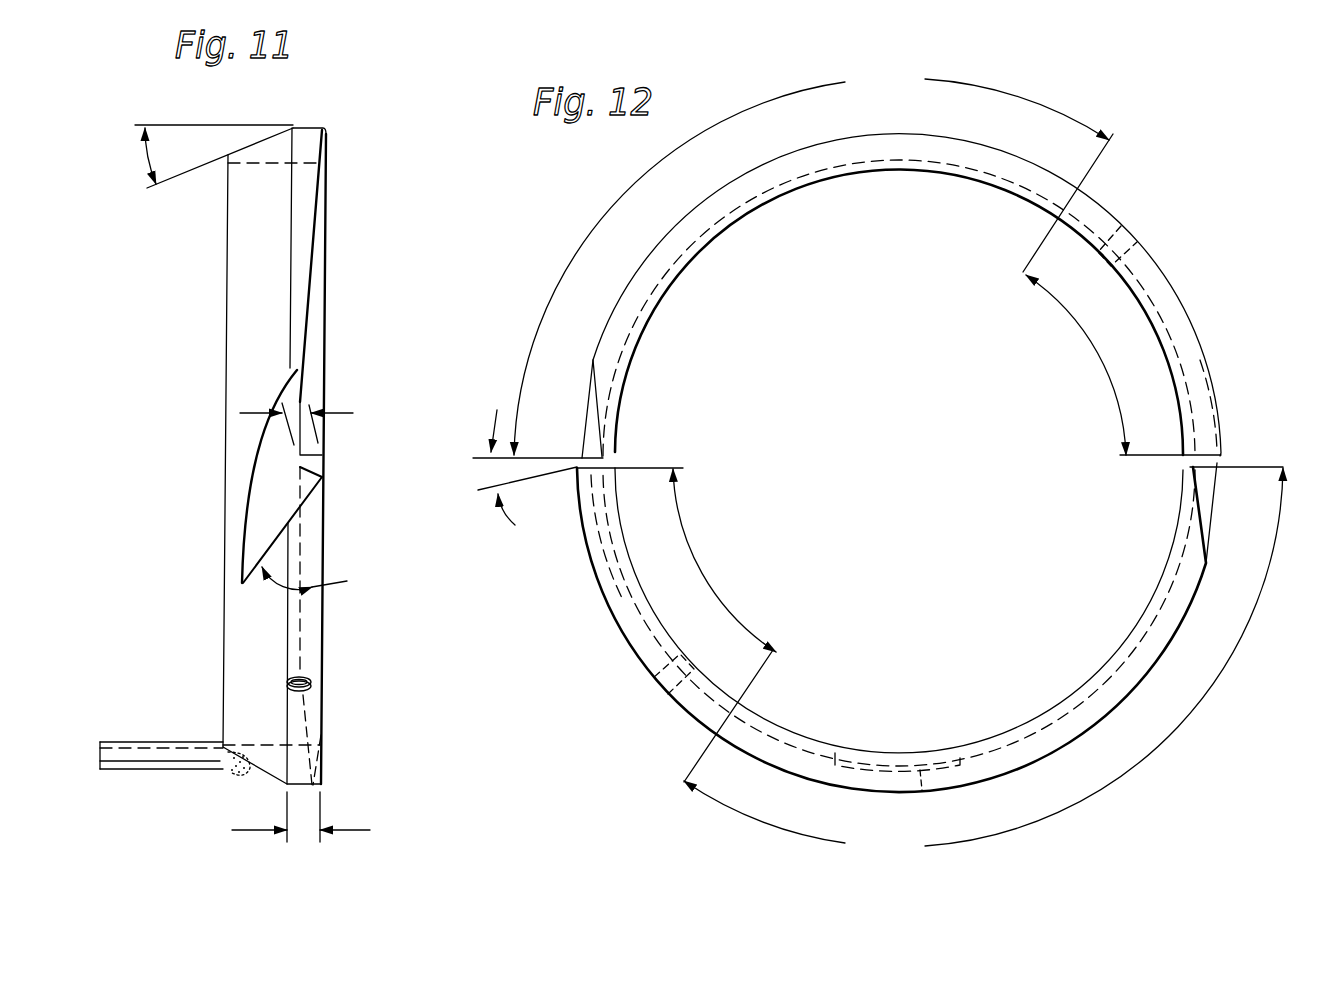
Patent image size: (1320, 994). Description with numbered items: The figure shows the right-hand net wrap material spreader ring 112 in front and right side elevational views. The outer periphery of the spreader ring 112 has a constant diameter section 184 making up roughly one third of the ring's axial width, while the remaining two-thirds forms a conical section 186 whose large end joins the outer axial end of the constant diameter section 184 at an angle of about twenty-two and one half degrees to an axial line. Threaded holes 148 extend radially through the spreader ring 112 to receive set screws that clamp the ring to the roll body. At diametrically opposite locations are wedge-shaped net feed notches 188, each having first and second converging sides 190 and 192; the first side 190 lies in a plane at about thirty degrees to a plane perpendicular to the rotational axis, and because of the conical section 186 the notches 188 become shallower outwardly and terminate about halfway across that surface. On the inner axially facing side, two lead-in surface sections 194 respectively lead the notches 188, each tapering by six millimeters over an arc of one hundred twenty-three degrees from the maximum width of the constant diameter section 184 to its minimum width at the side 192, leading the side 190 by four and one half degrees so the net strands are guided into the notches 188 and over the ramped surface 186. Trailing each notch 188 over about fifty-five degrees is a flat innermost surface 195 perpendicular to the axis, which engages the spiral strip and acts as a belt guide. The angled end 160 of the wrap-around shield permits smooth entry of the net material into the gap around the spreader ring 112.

In FIG. 11, the spreader ring 112 is at (338, 327).
In FIG. 12, the spreader ring 112 is at (636, 685).
In FIG. 11, the threaded holes 148 is at (312, 689).
In FIG. 12, the threaded holes 148 is at (1122, 250).
In FIG. 11, the angled rear end of shield 160 is at (183, 770).
In FIG. 12, the angled rear end of shield 160 is at (918, 790).
In FIG. 11, the constant diameter section 184 is at (310, 128).
In FIG. 12, the constant diameter section 184 is at (1176, 292).
In FIG. 11, the conical section 186 is at (250, 145).
In FIG. 11, the net feed notches 188 is at (294, 402).
In FIG. 12, the net feed notches 188 is at (1232, 460).
In FIG. 11, the first converging side 190 is at (253, 548).
In FIG. 11, the second converging side 192 is at (243, 505).
In FIG. 11, the lead-in surface section 194 is at (311, 250).
In FIG. 12, the lead-in surface section 194 is at (778, 183).
In FIG. 11, the innermost surface 195 is at (323, 655).
In FIG. 12, the innermost surface 195 is at (1186, 330).